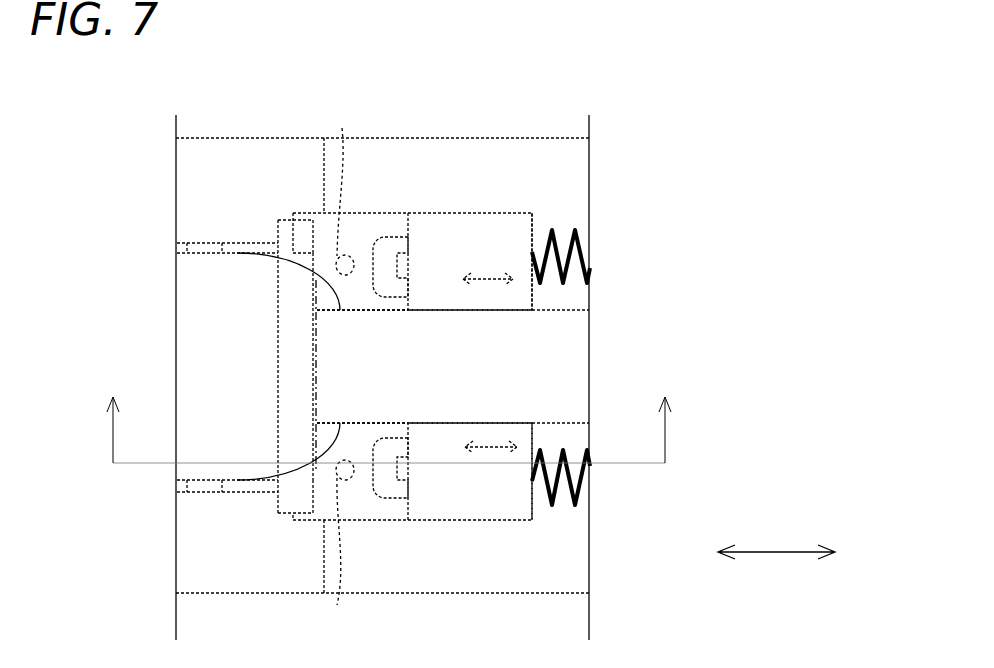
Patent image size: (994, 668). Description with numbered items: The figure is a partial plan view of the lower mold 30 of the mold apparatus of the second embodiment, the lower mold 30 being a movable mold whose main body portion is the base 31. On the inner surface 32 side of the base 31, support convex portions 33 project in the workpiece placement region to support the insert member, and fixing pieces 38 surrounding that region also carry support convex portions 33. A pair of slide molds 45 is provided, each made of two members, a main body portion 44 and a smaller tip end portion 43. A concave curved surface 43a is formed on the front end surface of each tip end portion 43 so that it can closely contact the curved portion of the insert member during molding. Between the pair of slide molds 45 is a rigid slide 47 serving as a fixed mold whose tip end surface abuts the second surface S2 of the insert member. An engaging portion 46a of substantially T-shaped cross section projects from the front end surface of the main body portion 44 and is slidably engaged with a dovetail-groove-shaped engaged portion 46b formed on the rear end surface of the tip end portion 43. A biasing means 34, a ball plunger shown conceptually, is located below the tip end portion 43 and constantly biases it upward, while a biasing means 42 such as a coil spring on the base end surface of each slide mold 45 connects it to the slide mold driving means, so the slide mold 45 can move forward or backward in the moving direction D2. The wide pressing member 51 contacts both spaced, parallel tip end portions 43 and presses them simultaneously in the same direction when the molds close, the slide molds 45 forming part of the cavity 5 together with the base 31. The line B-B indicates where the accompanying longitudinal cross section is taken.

The cavity 5 is at (238, 247).
The lower mold 30 is at (758, 174).
The base 31 is at (552, 568).
The inner surface 32 is at (557, 189).
The support convex portion 33 is at (203, 247).
The biasing means 34 is at (336, 368).
The fixing piece 38 is at (193, 163).
The biasing means 42 is at (583, 253).
The tip end portion 43 is at (363, 213).
The concave curved surface 43a is at (317, 263).
The main body portion 44 is at (463, 213).
The slide mold 45 is at (398, 162).
The engaging portion 46a is at (385, 272).
The engaged portion 46b is at (382, 450).
The rigid slide 47 is at (562, 360).
The pressing member 51 is at (277, 368).
The second surface S2 is at (332, 388).
The line B- B is at (391, 417).
The moving direction D2 is at (774, 556).